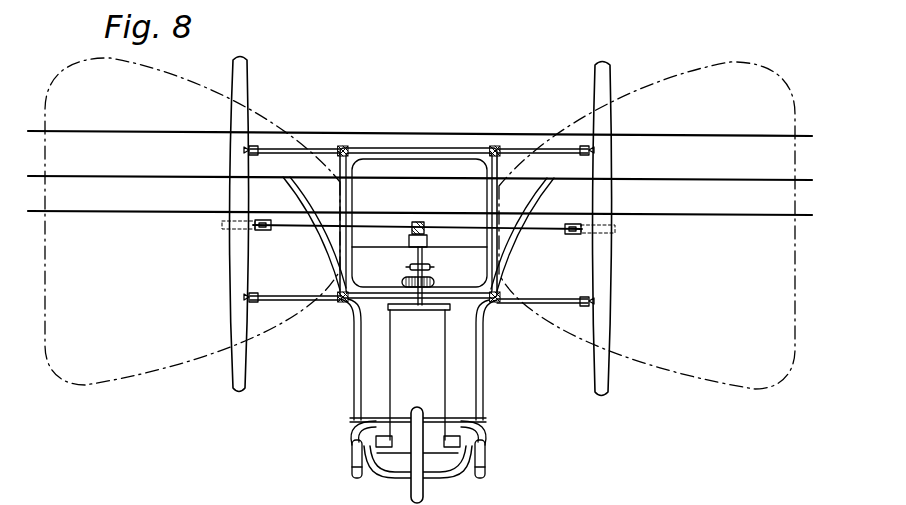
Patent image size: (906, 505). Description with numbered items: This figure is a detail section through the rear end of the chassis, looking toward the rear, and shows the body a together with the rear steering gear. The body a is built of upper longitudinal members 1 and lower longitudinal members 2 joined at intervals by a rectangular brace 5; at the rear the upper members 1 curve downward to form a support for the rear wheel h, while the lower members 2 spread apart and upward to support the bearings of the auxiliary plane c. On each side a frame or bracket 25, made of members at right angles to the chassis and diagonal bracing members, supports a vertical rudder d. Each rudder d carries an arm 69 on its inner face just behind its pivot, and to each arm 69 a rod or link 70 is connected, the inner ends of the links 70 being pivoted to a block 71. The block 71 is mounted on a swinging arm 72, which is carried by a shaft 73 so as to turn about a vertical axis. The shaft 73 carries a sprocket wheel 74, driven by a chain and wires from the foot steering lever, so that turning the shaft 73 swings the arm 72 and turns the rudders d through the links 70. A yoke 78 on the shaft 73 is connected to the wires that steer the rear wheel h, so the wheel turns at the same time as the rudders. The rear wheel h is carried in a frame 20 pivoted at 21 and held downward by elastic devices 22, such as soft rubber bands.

The upper longitudinal member 1 is at (344, 148).
The lower longitudinal member 2 is at (343, 304).
The rectangular brace 5 is at (419, 223).
The frame 20 is at (442, 469).
The pivot 21 is at (444, 382).
The elastic devices 22 is at (370, 427).
The frame or bracket 25 is at (419, 292).
The arm 69 is at (258, 231).
The rod or link 70 is at (374, 221).
The block 71 is at (412, 233).
The swinging arm 72 is at (428, 239).
The shaft 73 is at (416, 266).
The sprocket wheel 74 is at (435, 282).
The yoke 78 is at (407, 307).
The body a is at (611, 122).
The auxiliary plane c is at (420, 223).
The vertical rudder d is at (245, 87).
The rear wheel h is at (424, 495).